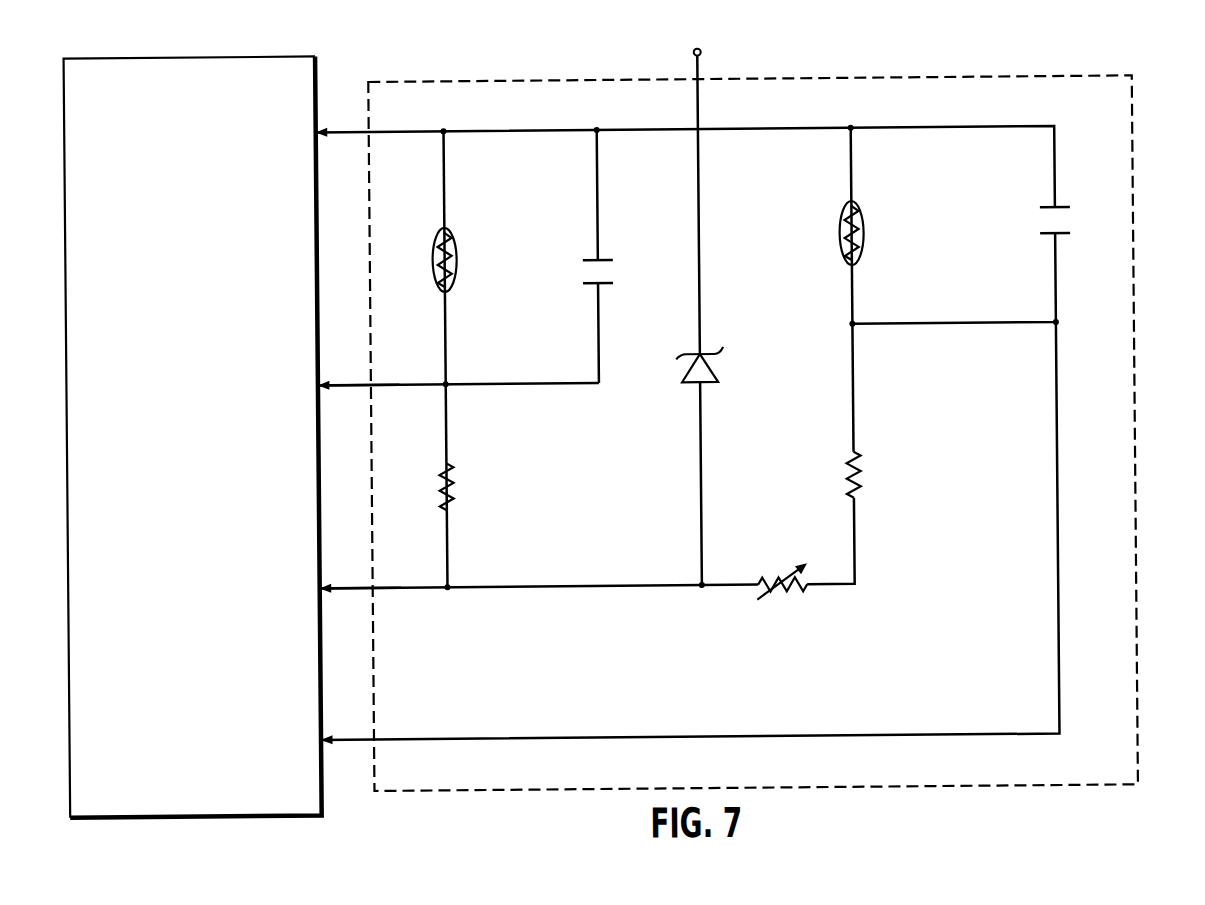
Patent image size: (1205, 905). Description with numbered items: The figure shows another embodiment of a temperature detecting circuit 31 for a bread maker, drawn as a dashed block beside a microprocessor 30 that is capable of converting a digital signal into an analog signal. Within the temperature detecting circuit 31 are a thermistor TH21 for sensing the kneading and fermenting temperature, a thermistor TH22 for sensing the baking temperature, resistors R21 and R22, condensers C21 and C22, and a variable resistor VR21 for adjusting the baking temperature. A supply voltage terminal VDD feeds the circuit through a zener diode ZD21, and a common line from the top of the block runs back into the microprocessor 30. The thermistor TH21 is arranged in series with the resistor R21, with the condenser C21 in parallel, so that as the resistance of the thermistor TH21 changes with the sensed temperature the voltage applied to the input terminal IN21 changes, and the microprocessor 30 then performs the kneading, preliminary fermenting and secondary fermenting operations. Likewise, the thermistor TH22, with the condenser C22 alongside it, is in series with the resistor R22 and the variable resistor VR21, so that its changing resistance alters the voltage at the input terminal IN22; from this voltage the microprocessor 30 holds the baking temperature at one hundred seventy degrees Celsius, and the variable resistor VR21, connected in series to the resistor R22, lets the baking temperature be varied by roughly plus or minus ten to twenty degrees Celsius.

The microprocessor 30 is at (318, 800).
The temperature detecting circuit 31 is at (1134, 762).
The thermistor TH21 is at (472, 259).
The thermistor TH22 is at (880, 232).
The condenser C21 is at (619, 271).
The condenser C22 is at (1076, 219).
The zener diode ZD21 is at (723, 365).
The resistor R21 is at (468, 487).
The resistor R22 is at (879, 474).
The variable resistor VR21 is at (784, 569).
The supply voltage terminal VDD is at (703, 39).
The input terminal IN21 is at (333, 385).
The input terminal IN22 is at (334, 589).